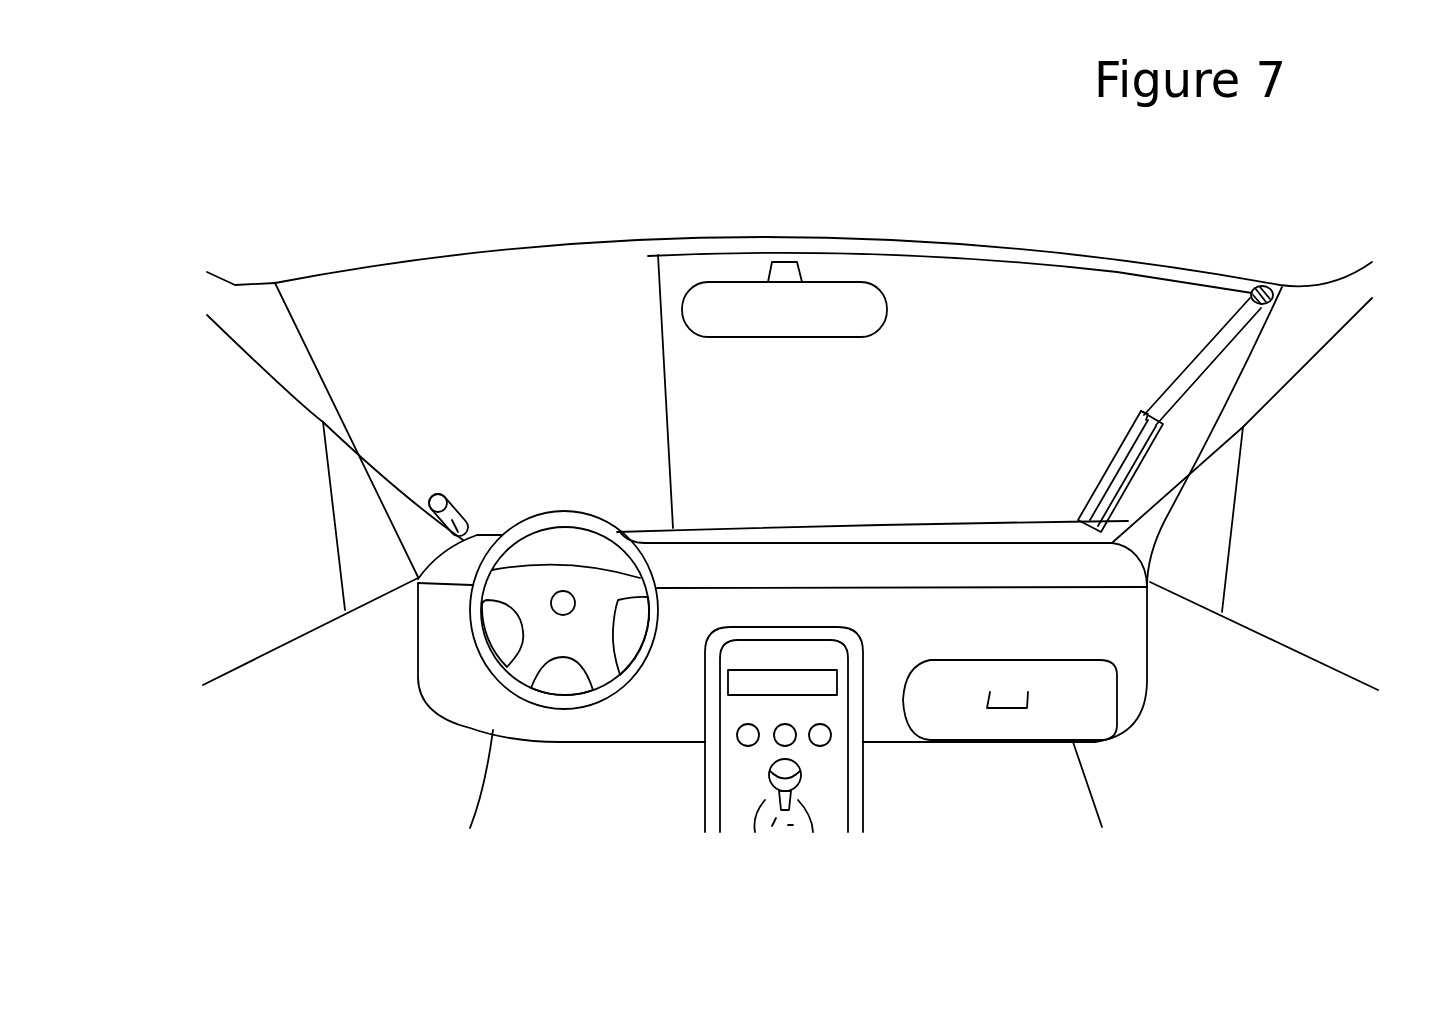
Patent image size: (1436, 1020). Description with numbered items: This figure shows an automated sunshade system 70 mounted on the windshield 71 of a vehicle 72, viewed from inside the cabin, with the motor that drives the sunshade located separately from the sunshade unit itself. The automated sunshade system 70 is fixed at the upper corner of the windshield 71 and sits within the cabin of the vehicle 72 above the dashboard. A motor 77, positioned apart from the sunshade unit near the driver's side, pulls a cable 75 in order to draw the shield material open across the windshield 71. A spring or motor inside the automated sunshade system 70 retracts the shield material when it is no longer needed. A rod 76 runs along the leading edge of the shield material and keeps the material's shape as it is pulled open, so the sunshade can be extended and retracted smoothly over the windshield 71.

The automated sunshade system 70 is at (1190, 410).
The windshield 71 is at (1277, 290).
The vehicle 72 is at (298, 515).
The cable 75 is at (482, 535).
The rod 76 is at (658, 325).
The motor 77 is at (418, 579).